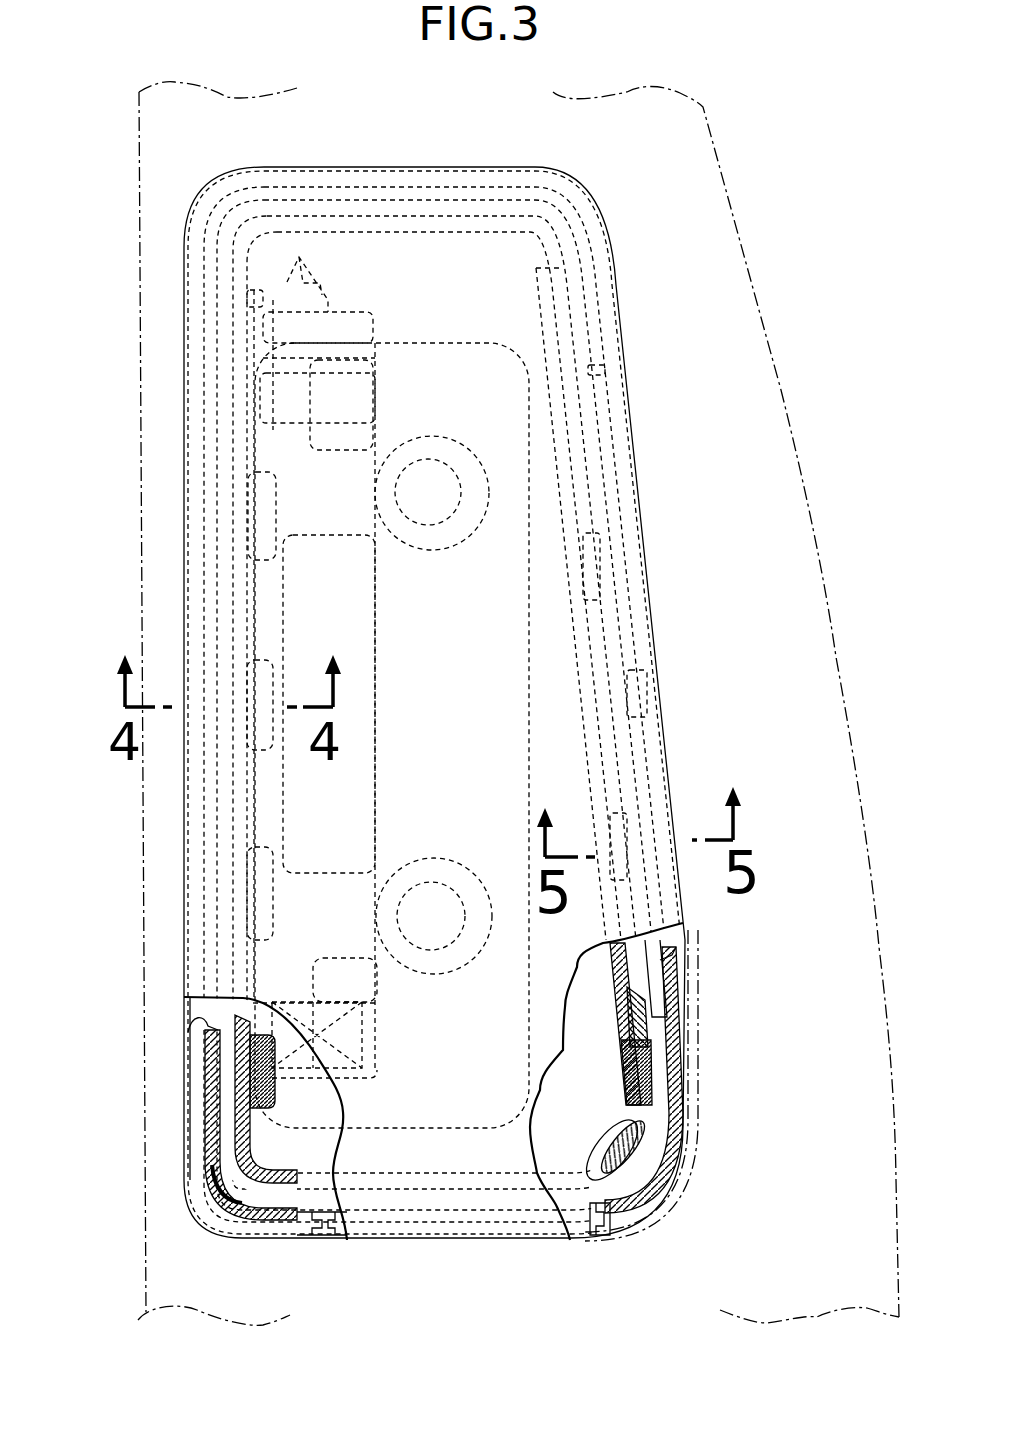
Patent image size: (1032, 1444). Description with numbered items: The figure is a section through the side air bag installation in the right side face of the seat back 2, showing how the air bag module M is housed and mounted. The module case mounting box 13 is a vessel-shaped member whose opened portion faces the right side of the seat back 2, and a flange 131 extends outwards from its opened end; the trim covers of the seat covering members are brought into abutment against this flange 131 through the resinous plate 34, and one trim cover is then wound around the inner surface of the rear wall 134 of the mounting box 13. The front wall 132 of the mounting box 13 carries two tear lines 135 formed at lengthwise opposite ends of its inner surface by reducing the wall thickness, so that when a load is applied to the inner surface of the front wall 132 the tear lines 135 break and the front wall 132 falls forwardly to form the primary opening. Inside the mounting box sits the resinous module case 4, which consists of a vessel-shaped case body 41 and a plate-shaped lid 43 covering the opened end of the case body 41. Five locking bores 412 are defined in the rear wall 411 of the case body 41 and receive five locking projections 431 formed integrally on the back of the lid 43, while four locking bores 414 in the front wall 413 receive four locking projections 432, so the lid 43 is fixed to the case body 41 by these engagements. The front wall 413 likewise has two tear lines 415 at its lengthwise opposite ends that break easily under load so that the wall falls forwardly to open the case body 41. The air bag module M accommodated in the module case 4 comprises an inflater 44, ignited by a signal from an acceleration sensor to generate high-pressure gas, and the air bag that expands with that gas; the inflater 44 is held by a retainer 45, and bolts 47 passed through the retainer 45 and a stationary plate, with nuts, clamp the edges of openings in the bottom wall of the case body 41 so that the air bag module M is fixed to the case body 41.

The seat back 2 is at (768, 483).
The module case 4 is at (640, 362).
The module case mounting box 13 is at (192, 1125).
The flange 131 is at (197, 1010).
The front wall 132 is at (680, 1030).
The rear wall 134 is at (200, 1045).
The tear lines 135 is at (582, 187).
The resinous plate 34 is at (683, 947).
The case body 41 is at (288, 1163).
The rear wall 411 is at (257, 1185).
The locking bores 412 is at (260, 1157).
The front wall 413 is at (665, 1012).
The locking bores 414 is at (633, 1057).
The tear lines 415 is at (535, 252).
The lid 43 is at (399, 1185).
The locking projections 431 is at (277, 1088).
The locking projections 432 is at (650, 1090).
The inflater 44 is at (367, 637).
The retainer 45 is at (417, 340).
The bolts 47 is at (432, 475).
The air bag module M is at (385, 788).